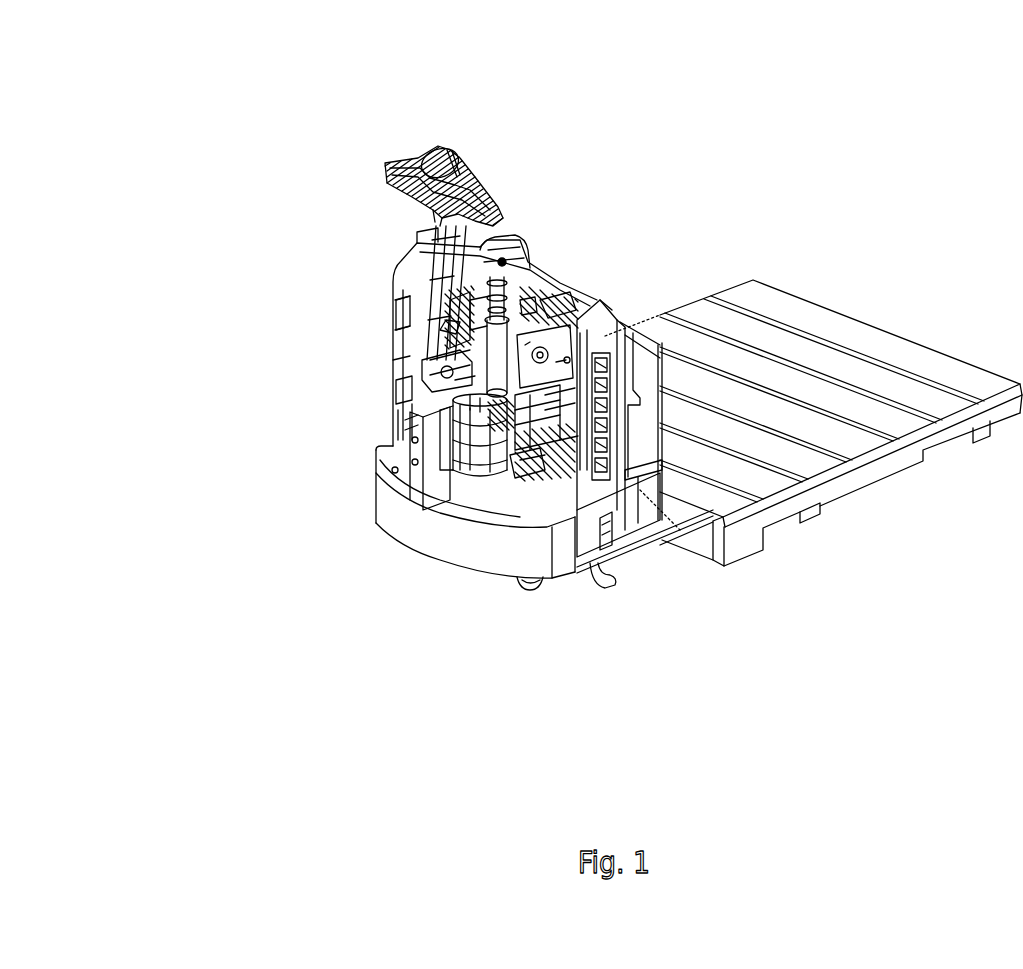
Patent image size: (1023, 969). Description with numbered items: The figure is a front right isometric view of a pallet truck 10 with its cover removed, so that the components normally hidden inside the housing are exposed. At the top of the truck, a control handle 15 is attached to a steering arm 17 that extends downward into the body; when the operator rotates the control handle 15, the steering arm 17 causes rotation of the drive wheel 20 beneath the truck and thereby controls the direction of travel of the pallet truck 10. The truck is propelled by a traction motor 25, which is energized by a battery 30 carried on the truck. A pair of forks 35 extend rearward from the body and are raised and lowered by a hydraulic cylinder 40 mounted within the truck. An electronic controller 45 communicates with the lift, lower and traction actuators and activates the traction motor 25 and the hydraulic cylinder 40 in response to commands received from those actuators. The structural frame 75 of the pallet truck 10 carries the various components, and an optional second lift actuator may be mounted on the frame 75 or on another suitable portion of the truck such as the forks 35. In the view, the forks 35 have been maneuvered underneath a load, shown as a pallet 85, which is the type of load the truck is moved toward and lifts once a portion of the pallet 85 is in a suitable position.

The pallet truck 10 is at (327, 349).
The control handle 15 is at (393, 155).
The steering arm 17 is at (442, 262).
The drive wheel 20 is at (520, 590).
The traction motor 25 is at (460, 437).
The battery 30 is at (623, 330).
The forks 35 is at (647, 537).
The hydraulic cylinder 40 is at (393, 288).
The electronic controller 45 is at (582, 436).
The frame 75 is at (518, 258).
The pallet 85 is at (720, 342).